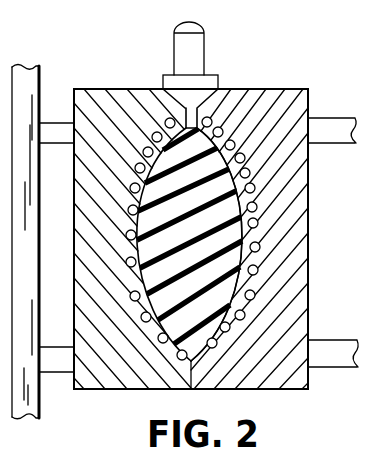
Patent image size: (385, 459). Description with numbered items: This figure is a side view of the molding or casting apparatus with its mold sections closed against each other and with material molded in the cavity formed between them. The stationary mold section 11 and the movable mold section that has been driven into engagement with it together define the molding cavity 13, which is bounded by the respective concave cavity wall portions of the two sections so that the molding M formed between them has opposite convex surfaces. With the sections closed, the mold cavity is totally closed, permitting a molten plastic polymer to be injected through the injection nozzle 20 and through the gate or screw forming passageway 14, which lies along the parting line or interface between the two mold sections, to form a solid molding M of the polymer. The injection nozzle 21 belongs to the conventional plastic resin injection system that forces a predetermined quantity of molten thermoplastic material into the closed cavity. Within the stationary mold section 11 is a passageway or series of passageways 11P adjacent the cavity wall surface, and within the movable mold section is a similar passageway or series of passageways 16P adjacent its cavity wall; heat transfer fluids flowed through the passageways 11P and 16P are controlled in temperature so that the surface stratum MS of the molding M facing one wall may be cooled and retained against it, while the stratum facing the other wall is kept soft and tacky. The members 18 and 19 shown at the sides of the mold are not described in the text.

The stationary mold section 11 is at (122, 383).
The passageway 11P is at (122, 90).
The molding cavity 13 is at (245, 200).
The passageway 14 is at (193, 112).
The passageway 16P is at (247, 297).
The support rod 18 is at (320, 126).
The support frame member 19 is at (27, 80).
The injection nozzle 20 is at (204, 58).
The injection nozzle 21 is at (190, 93).
The molding M is at (228, 232).
The surface stratum MS is at (239, 257).